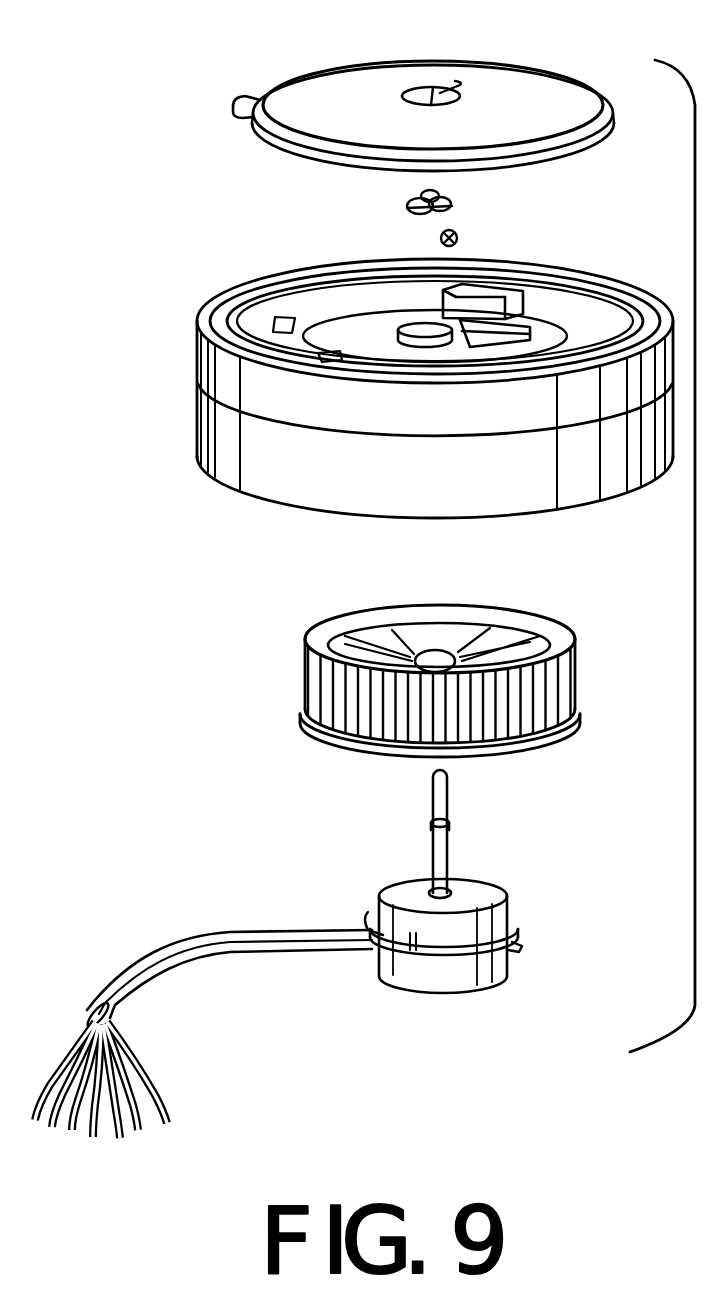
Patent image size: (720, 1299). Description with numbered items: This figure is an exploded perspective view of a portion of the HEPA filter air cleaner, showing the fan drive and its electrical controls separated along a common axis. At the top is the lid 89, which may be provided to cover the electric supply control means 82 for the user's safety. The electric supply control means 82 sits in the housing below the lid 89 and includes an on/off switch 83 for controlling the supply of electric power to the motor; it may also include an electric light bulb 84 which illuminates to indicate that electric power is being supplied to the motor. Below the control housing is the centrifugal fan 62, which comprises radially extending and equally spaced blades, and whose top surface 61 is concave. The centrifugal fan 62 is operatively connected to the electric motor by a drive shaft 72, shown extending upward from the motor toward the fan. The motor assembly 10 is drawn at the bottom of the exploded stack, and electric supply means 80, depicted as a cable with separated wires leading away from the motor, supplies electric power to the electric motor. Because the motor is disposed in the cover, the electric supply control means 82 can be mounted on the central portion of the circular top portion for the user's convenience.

The lid 89 is at (502, 78).
The electric supply control means 82 is at (455, 280).
The on/off switch 83 is at (457, 203).
The electric light bulb 84 is at (466, 236).
The top surface 61 is at (480, 637).
The centrifugal fan 62 is at (547, 693).
The drive shaft 72 is at (450, 827).
The motor 10 is at (480, 895).
The electric supply means 80 is at (260, 937).